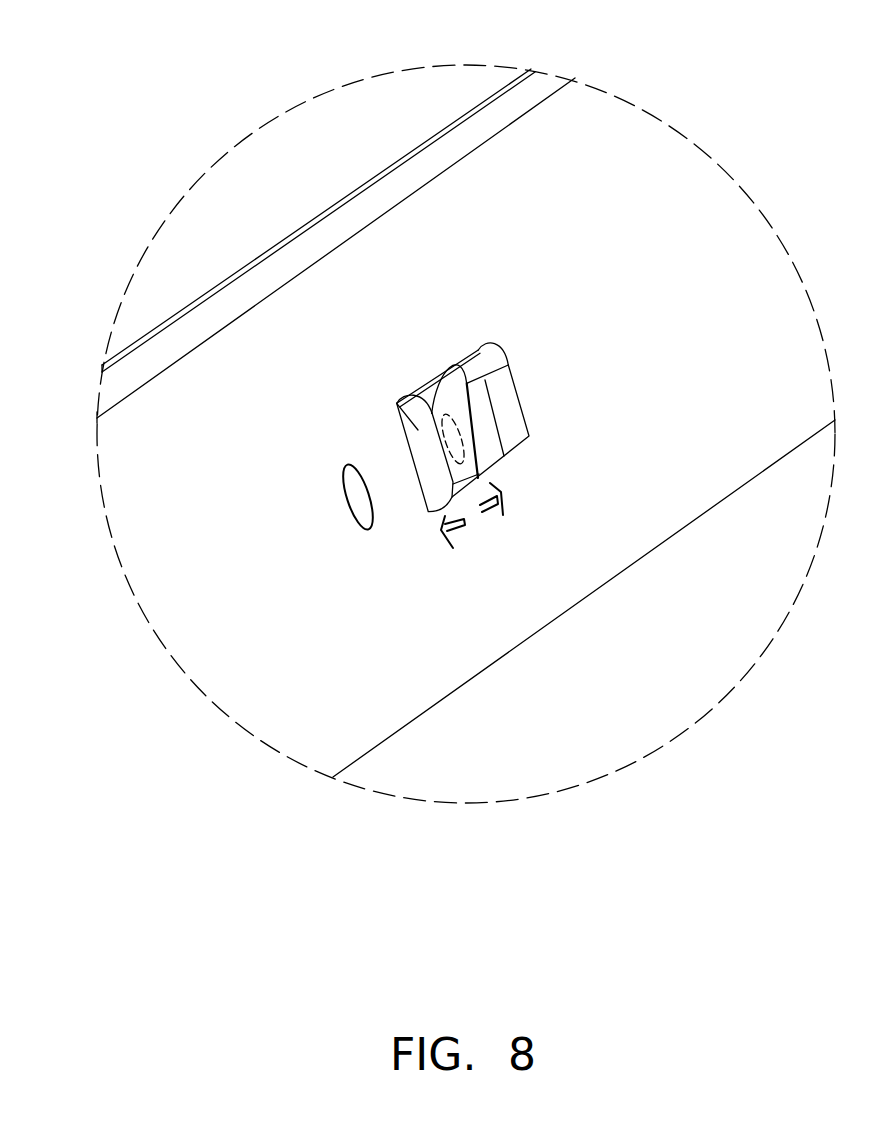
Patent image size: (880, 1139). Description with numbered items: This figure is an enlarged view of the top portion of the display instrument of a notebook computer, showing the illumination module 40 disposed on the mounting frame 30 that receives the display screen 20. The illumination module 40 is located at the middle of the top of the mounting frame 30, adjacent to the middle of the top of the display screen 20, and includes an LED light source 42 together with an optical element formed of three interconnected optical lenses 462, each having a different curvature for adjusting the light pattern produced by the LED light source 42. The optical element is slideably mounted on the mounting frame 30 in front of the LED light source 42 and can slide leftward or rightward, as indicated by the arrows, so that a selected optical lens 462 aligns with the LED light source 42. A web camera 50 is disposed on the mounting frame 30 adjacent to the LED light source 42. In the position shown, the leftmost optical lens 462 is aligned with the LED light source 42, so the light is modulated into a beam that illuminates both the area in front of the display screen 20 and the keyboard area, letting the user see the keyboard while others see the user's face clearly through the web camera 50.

The display screen 20 is at (498, 758).
The mounting frame 30 is at (597, 198).
The illumination module 40 is at (397, 405).
The LED light source 42 is at (450, 440).
The optical lens 462 is at (457, 377).
The web camera 50 is at (362, 502).